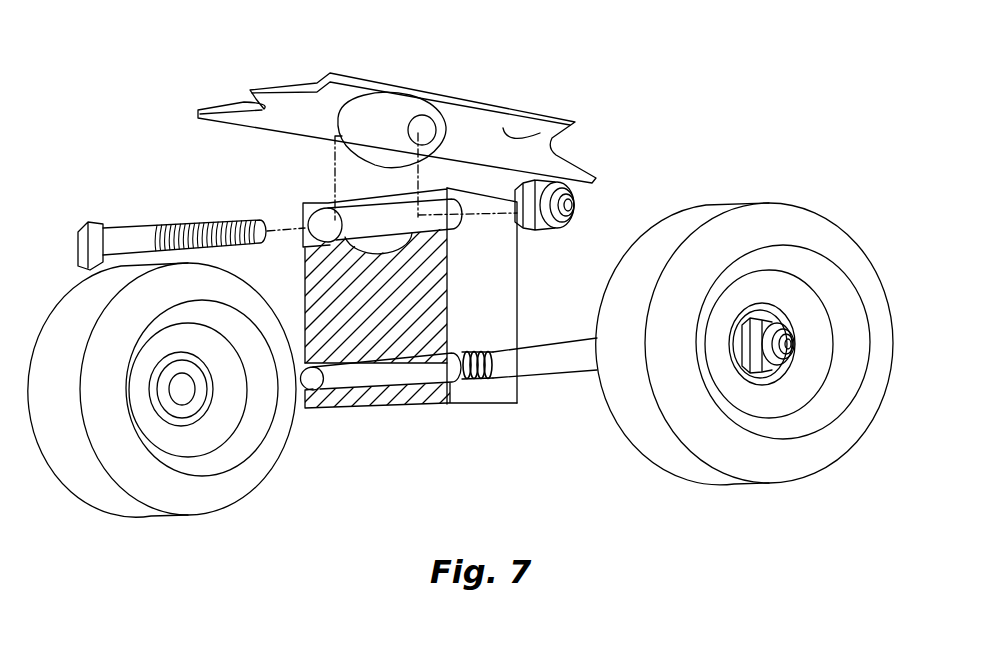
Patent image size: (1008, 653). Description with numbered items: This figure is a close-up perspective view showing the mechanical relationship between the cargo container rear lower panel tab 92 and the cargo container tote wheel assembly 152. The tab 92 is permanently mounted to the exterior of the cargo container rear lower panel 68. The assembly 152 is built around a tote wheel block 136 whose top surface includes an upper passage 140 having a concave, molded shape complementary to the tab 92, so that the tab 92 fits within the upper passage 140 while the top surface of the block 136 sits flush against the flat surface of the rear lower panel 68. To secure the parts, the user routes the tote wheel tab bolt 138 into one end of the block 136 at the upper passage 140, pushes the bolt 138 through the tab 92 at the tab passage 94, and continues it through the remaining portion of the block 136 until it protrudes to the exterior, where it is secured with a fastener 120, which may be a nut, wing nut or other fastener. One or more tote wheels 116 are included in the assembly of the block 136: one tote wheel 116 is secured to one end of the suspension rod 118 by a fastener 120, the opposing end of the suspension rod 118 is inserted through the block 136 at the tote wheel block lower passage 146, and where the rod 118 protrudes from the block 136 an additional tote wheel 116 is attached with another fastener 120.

The cargo container rear lower panel 68 is at (578, 122).
The cargo container rear lower panel tab 92 is at (358, 115).
The tab passage 94 is at (424, 128).
The tote wheel 116 is at (66, 435).
The suspension rod 118 is at (570, 362).
The fastener 120 is at (577, 210).
The tote wheel block 136 is at (487, 283).
The tote wheel tab bolt 138 is at (142, 238).
The upper passage 140 is at (378, 222).
The tote wheel block lower passage 146 is at (358, 377).
The cargo container tote wheel assembly 152 is at (627, 35).